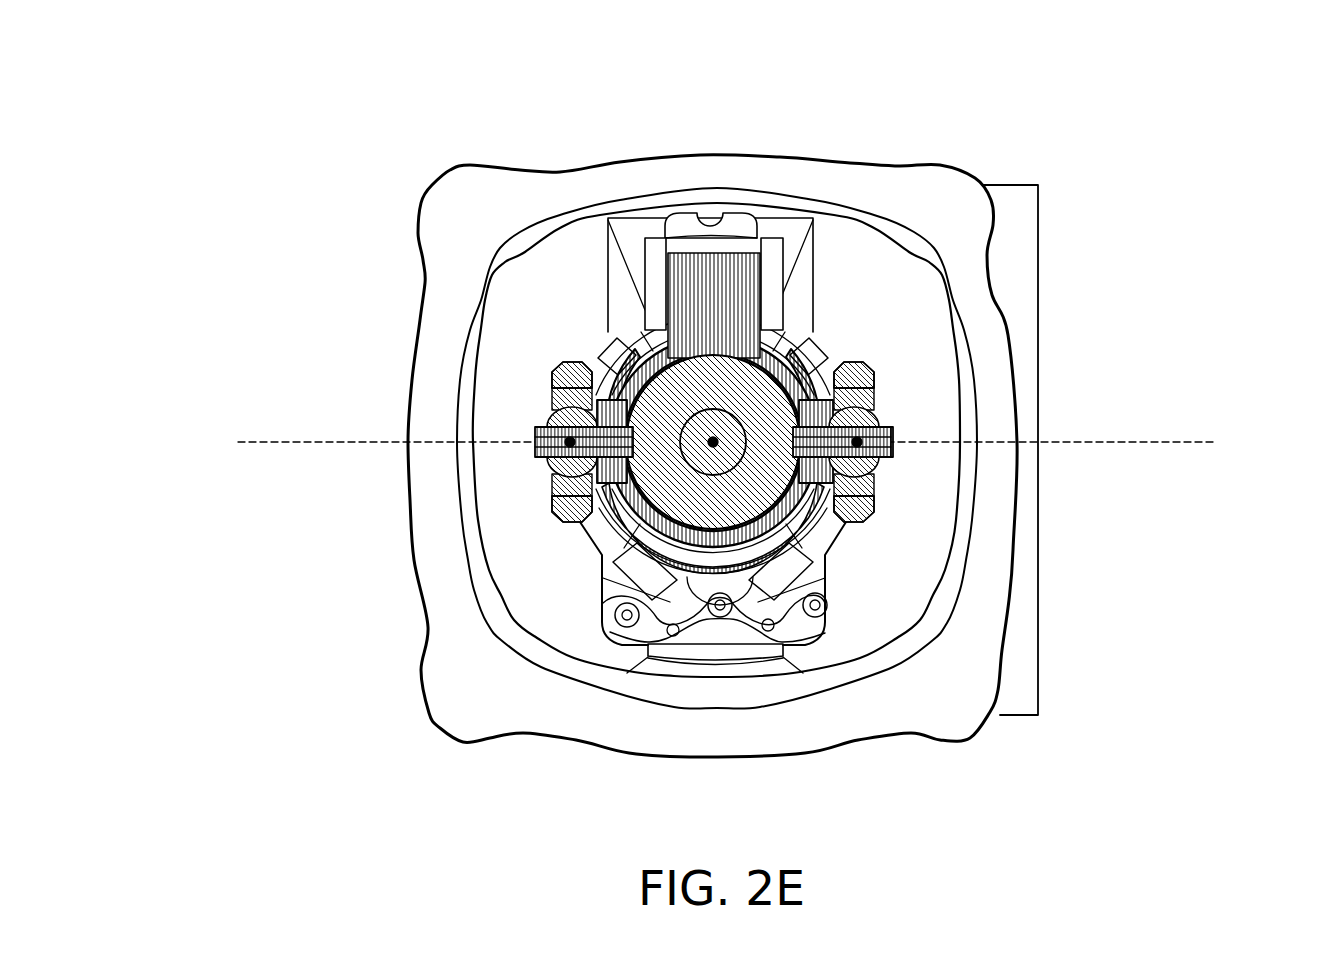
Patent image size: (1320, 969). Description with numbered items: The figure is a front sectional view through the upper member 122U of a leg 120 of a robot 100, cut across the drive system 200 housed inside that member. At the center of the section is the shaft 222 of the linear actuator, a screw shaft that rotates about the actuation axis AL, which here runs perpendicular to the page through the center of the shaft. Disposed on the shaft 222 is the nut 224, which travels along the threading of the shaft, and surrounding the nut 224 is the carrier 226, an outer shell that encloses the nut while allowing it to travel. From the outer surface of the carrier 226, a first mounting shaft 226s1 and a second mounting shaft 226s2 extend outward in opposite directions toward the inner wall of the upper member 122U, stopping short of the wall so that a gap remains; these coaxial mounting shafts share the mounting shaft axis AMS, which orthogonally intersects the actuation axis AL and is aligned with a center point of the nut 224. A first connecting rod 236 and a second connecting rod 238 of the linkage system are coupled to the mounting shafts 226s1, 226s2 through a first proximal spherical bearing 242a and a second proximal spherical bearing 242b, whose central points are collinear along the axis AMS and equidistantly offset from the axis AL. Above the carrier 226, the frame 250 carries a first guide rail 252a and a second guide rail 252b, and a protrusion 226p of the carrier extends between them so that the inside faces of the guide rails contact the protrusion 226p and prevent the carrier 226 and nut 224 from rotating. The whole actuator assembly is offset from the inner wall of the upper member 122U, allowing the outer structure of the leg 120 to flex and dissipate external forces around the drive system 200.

The robot 100 is at (1077, 98).
The leg 120 is at (757, 425).
The drive system 200 is at (757, 425).
The upper member 122U is at (932, 162).
The frame 250 is at (920, 342).
The first guide rail 252a is at (645, 272).
The second guide rail 252b is at (889, 460).
The carrier 226 is at (620, 363).
The protrusion 226p is at (648, 320).
The first mounting shaft 226s1 is at (533, 437).
The second mounting shaft 226s2 is at (897, 432).
The nut 224 is at (823, 367).
The shaft 222 is at (600, 582).
The first connecting rod 236 is at (547, 383).
The second connecting rod 238 is at (880, 385).
The first proximal spherical bearing 242a is at (547, 420).
The second proximal spherical bearing 242b is at (880, 415).
The mounting shaft axis AMS is at (701, 438).
The actuation axis AL is at (708, 447).